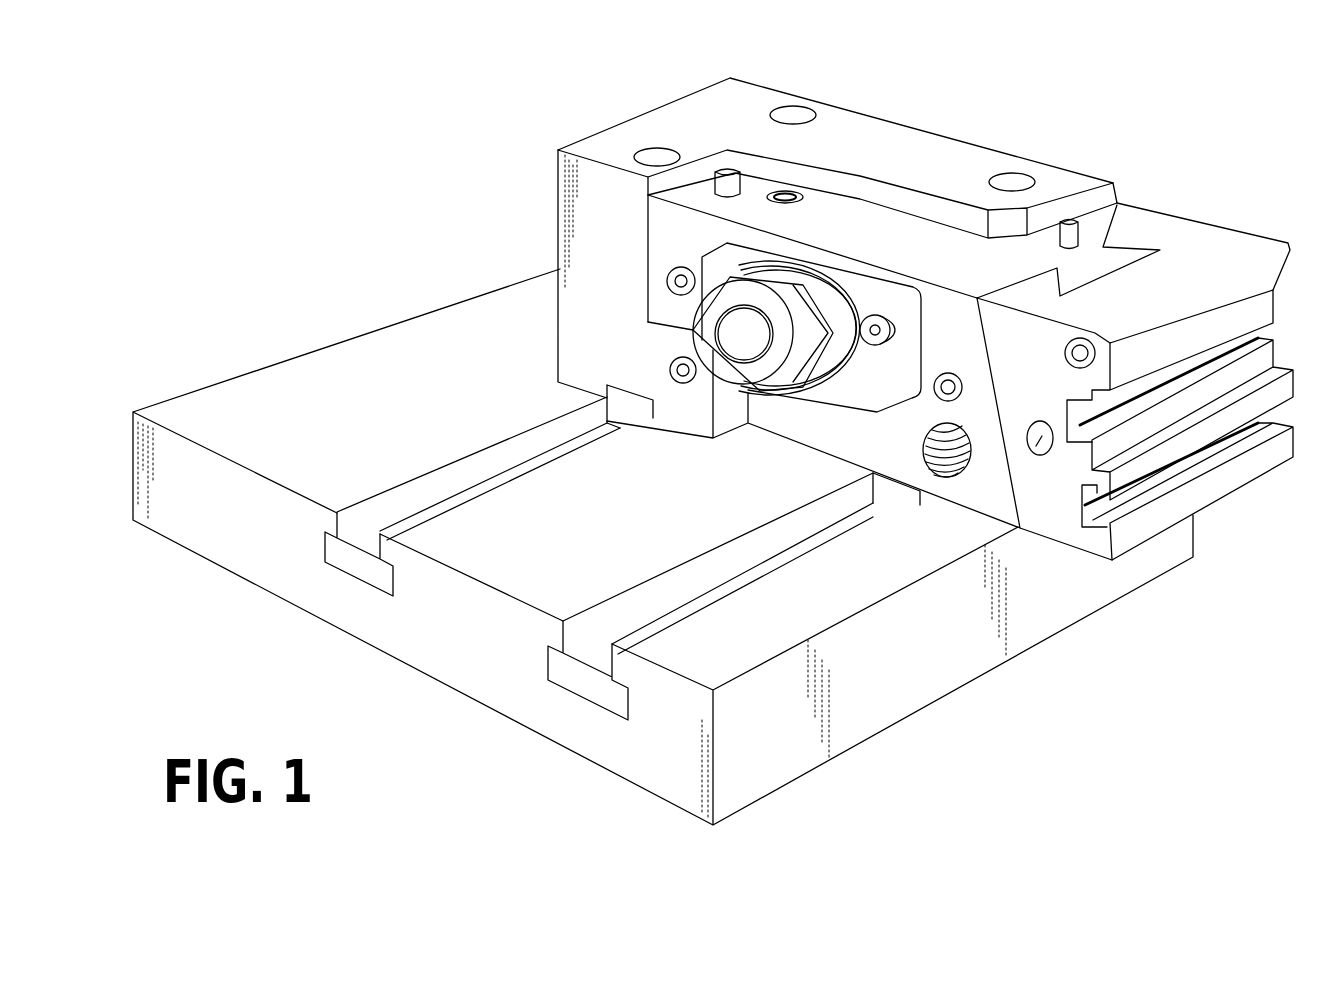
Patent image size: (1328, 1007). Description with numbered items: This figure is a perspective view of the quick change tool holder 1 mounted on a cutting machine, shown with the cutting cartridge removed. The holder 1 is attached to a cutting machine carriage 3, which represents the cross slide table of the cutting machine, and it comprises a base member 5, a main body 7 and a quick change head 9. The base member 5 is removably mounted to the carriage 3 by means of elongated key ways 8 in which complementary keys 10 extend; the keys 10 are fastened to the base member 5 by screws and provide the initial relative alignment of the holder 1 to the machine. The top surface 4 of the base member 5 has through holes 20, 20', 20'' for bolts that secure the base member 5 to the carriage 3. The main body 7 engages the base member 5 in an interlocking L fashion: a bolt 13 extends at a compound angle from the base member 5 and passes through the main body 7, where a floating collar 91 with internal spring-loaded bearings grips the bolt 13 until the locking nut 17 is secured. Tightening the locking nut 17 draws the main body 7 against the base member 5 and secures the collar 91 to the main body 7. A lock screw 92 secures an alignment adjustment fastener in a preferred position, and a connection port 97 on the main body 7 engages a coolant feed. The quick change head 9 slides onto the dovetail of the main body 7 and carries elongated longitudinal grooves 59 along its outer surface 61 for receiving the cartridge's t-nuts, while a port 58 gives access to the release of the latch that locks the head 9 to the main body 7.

The quick change tool holder 1 is at (923, 92).
The cutting machine carriage 3 is at (553, 553).
The top surface 4 is at (942, 162).
The base member 5 is at (611, 296).
The main body 7 is at (959, 342).
The elongated key ways 8 is at (333, 562).
The quick change head 9 is at (1033, 370).
The keys 10 is at (625, 405).
The bolt 13 is at (740, 345).
The locking nut 17 is at (798, 372).
The through hole 20 is at (631, 122).
The through hole 20' is at (822, 80).
The through hole 20'' is at (1044, 147).
The port 58 is at (1032, 452).
The elongated longitudinal grooves 59 is at (1088, 503).
The outer surface 61 is at (1222, 430).
The floating collar 91 is at (889, 403).
The lock screw 92 is at (785, 191).
The connection port 97 is at (950, 478).